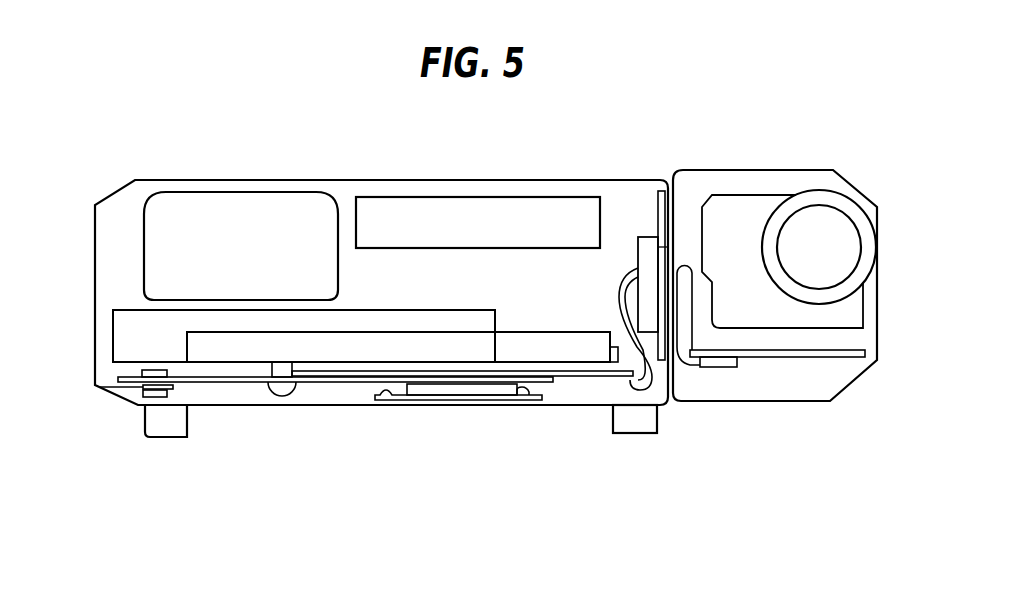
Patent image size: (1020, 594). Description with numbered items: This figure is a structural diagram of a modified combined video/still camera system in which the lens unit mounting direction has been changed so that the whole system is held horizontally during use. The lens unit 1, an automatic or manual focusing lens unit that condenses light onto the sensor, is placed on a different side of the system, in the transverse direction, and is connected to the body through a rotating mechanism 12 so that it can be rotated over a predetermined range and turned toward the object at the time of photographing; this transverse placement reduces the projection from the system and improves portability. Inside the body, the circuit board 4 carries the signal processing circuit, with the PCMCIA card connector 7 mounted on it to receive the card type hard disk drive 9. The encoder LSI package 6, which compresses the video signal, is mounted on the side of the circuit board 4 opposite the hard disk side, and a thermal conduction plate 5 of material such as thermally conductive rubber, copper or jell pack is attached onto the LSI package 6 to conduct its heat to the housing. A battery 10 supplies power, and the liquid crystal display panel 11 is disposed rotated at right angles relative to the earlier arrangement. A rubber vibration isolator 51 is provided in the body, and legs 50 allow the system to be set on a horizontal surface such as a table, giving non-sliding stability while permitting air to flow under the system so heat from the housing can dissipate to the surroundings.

The lens unit 1 is at (821, 232).
The circuit board 4 is at (462, 380).
The thermal conduction plate 5 is at (378, 400).
The LSI package 6 is at (530, 384).
The PCMCIA card connector 7 is at (565, 347).
The card type hard disk drive 9 is at (130, 340).
The battery 10 is at (247, 220).
The liquid crystal display panel 11 is at (467, 213).
The rotating mechanism 12 is at (652, 237).
The legs 50 is at (190, 423).
The rubber vibration isolator 51 is at (138, 407).